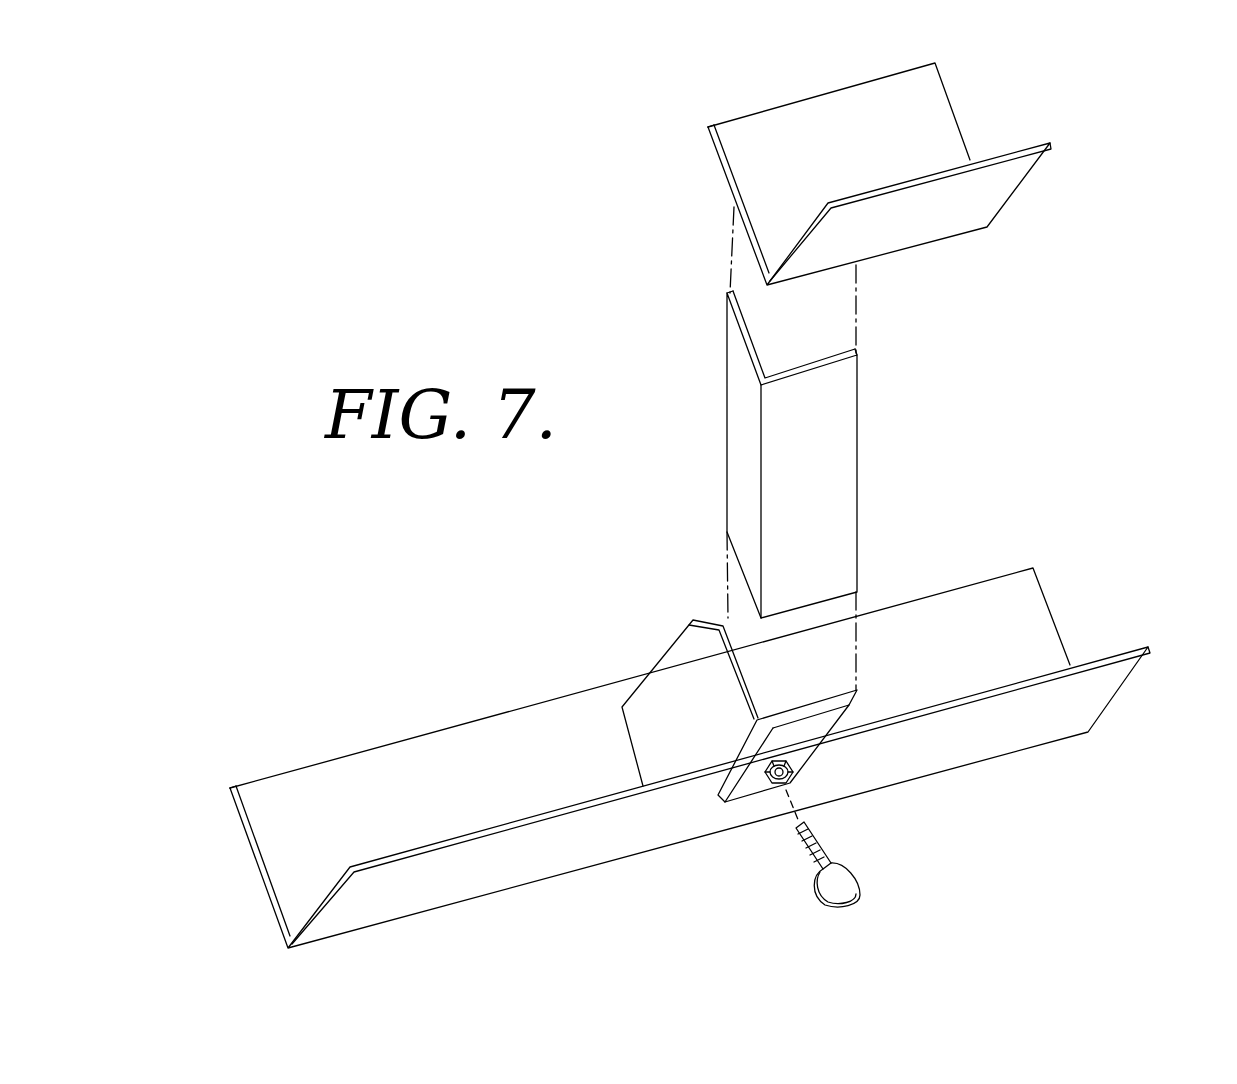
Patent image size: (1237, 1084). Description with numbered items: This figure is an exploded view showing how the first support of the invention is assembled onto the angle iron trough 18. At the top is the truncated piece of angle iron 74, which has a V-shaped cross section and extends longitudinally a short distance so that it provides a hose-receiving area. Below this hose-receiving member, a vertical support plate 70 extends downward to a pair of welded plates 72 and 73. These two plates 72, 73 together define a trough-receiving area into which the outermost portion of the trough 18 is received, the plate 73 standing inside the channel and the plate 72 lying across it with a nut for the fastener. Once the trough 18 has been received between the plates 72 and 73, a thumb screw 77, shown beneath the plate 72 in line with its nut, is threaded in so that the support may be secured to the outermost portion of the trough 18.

The trough 18 is at (262, 792).
The vertical support plate 70 is at (845, 468).
The welded plate 72 is at (743, 790).
The welded plate 73 is at (668, 662).
The V-shaped channel 74 is at (1010, 190).
The thumb screw 77 is at (850, 892).